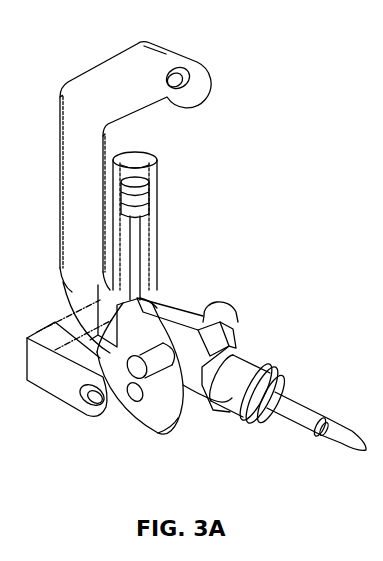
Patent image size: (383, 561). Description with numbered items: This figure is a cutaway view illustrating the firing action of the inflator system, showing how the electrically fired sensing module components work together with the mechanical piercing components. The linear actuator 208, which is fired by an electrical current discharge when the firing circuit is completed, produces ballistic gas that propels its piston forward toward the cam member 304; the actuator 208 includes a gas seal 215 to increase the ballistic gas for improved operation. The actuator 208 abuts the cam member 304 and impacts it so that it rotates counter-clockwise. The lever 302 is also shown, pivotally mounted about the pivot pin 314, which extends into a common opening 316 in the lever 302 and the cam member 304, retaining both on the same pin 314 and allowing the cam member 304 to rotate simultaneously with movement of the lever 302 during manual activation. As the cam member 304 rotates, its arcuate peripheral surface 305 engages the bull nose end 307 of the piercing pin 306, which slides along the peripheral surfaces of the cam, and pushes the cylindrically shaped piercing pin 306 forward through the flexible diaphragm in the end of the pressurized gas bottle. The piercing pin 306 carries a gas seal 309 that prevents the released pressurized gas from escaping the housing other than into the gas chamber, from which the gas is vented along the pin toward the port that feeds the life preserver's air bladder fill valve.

The lever 302 is at (83, 80).
The linear actuator 208 is at (143, 247).
The gas seal 215 is at (147, 202).
The cam member 304 is at (225, 337).
The arcuate peripheral surface 305 is at (198, 420).
The piercing pin 306 is at (302, 407).
The bull nose end 307 is at (228, 355).
The gas seal 309 is at (268, 373).
The pivot pin 314 is at (107, 413).
The common opening 316 is at (180, 417).